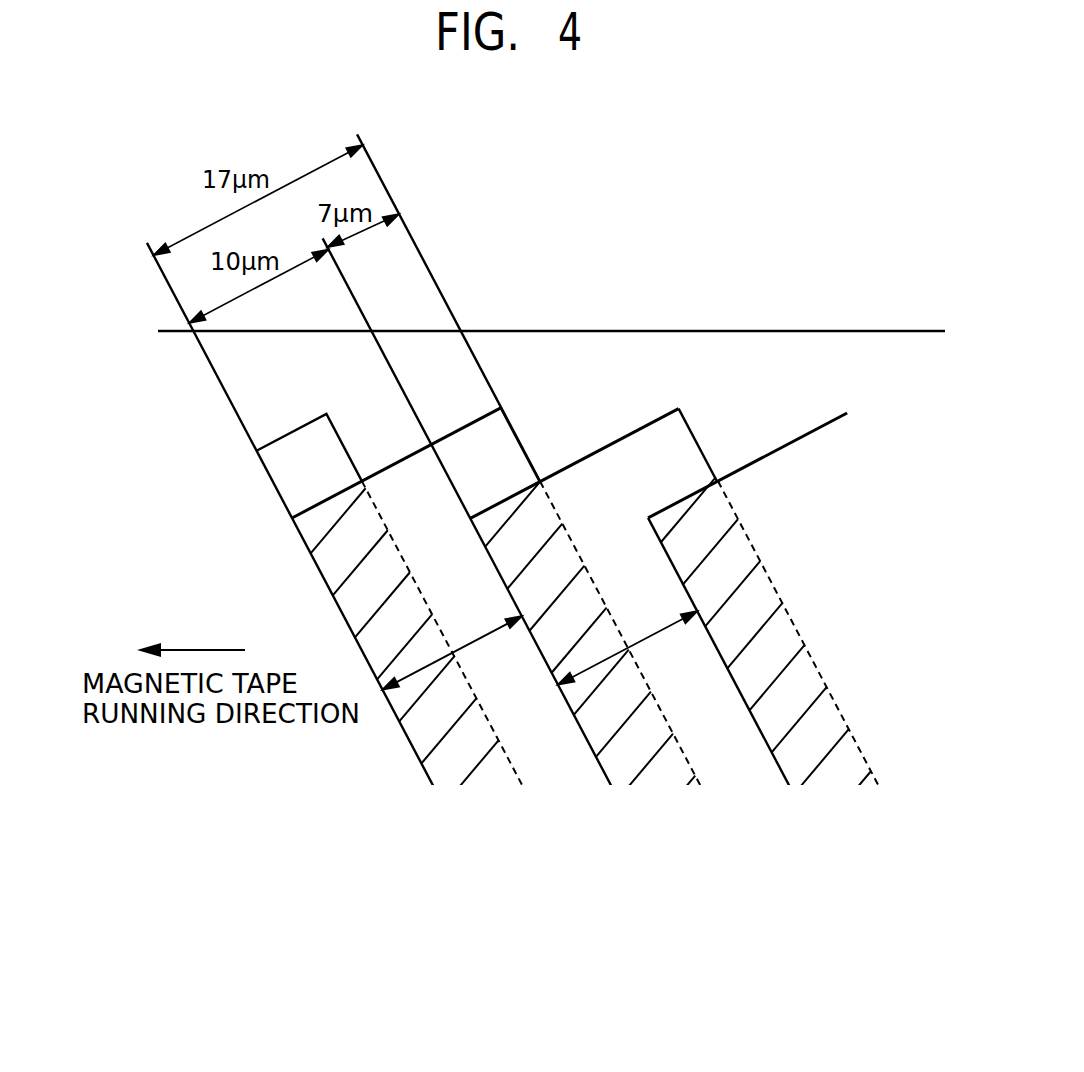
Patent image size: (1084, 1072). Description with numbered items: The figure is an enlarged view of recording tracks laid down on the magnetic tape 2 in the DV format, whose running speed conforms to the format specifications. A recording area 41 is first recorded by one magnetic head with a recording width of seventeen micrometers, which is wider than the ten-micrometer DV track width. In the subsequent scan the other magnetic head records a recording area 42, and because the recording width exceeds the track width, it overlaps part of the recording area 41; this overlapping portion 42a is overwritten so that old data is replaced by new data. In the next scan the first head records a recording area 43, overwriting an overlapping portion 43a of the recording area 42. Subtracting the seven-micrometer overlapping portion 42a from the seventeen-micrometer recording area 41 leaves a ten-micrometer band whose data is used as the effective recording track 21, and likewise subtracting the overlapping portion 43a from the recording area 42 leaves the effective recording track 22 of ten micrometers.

The magnetic tape 2 is at (866, 355).
The recording area 41 is at (503, 458).
The recording area 42 is at (566, 478).
The recording area 43 is at (829, 582).
The overlapping portion 42a is at (642, 748).
The overlapping portion 43a is at (808, 748).
The effective recording track 21 is at (490, 638).
The recording track 22 is at (651, 633).